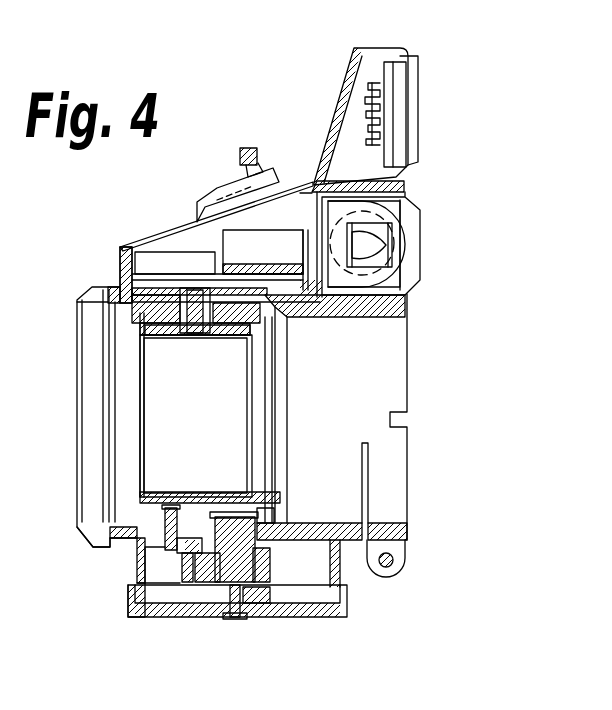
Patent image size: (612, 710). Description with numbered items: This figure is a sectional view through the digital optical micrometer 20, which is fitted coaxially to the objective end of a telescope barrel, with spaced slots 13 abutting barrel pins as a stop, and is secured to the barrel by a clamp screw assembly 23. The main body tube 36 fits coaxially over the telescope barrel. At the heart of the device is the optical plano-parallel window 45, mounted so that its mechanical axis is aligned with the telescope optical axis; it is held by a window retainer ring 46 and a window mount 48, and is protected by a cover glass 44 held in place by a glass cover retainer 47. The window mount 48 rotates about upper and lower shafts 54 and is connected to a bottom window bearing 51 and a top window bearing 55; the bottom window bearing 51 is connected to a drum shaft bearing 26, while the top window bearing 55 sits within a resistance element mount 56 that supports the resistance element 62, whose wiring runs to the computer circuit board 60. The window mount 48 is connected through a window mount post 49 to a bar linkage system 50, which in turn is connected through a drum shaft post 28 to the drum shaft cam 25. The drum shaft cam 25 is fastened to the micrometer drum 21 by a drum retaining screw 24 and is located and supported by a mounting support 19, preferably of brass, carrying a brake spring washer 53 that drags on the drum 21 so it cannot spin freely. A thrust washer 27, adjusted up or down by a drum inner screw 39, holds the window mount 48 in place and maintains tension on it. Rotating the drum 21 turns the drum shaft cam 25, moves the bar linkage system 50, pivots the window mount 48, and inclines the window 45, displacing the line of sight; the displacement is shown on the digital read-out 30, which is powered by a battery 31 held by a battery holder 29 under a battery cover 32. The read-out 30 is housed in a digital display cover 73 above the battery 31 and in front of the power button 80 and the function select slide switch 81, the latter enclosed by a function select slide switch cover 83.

The spaced slot 13 is at (410, 420).
The mounting support 19 is at (281, 565).
The digital optical micrometer 20 is at (243, 92).
The micrometer drum 21 is at (348, 606).
The clamp screw assembly 23 is at (396, 570).
The drum retaining screw 24 is at (240, 620).
The drum shaft cam 25 is at (218, 585).
The drum shaft bearing 26 is at (170, 508).
The thrust washer 27 is at (173, 498).
The drum shaft post 28 is at (256, 504).
The battery holder 29 is at (406, 302).
The digital read-out 30 is at (418, 116).
The battery 31 is at (410, 196).
The battery cover 32 is at (421, 242).
The main body tube 36 is at (127, 540).
The drum inner screw 39 is at (183, 586).
The cover glass 44 is at (77, 388).
The optical plano-parallel window 45 is at (155, 411).
The window retainer ring 46 is at (139, 437).
The glass cover retainer 47 is at (78, 538).
The window mount 48 is at (133, 544).
The window mount post 49 is at (236, 485).
The bar linkage system 50 is at (262, 495).
The bottom window bearing 51 is at (190, 492).
The brake spring washer 53 is at (268, 562).
The upper and lower shafts 54 is at (197, 290).
The top window bearing 55 is at (229, 340).
The resistance element mount 56 is at (131, 313).
The computer circuit board 60 is at (153, 273).
The resistance element 62 is at (119, 258).
The digital display cover 73 is at (412, 54).
The power button 80 is at (256, 150).
The function select slide switch 81 is at (234, 178).
The function select slide switch cover 83 is at (205, 200).